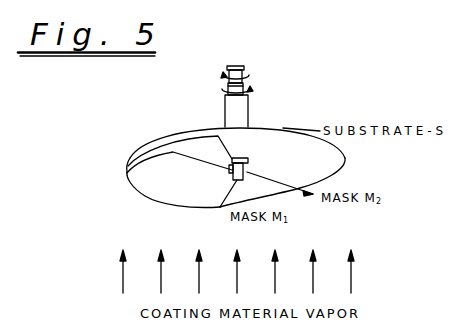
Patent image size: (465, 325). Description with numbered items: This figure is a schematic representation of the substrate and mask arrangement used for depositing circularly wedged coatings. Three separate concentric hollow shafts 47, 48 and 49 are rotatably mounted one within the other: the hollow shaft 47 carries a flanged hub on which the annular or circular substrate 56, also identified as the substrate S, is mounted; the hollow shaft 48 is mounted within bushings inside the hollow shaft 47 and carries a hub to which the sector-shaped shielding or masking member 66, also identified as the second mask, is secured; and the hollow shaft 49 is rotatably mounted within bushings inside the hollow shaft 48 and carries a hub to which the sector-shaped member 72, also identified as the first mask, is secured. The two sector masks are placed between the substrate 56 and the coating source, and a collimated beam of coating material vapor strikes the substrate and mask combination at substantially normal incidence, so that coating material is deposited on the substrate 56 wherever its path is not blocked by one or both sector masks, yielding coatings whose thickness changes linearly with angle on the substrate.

The hollow shaft 47 is at (252, 112).
The hollow shaft 48 is at (228, 90).
The hollow shaft 49 is at (227, 76).
The annular substrate 56 is at (342, 168).
The sector-shaped masking member 66 is at (280, 191).
The sector-shaped member 72 is at (160, 193).